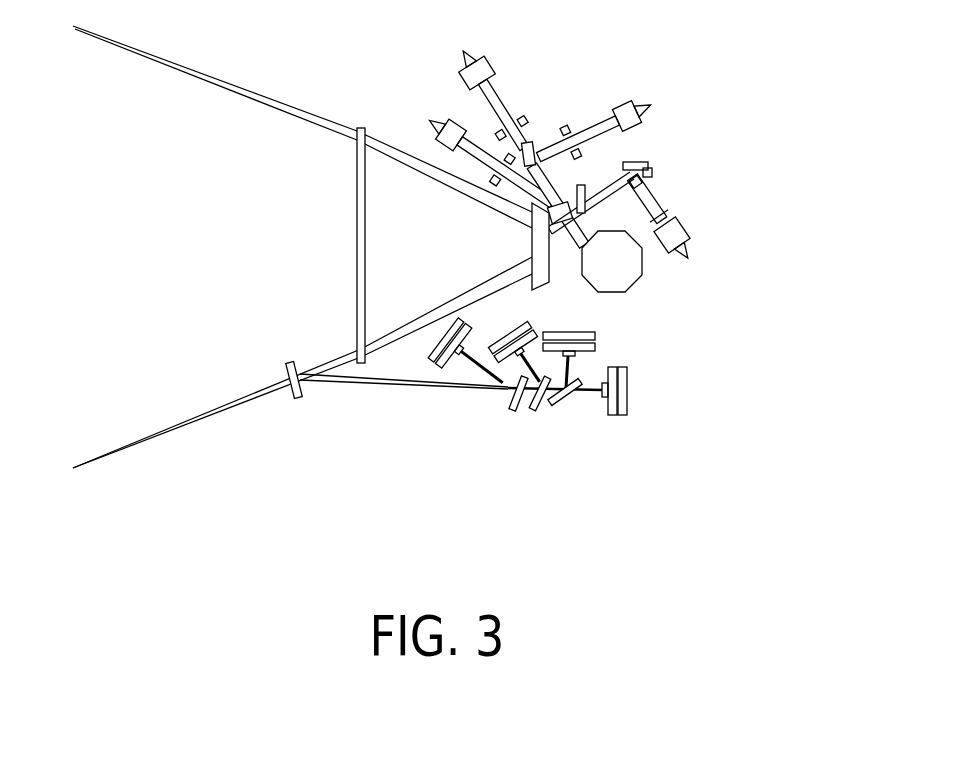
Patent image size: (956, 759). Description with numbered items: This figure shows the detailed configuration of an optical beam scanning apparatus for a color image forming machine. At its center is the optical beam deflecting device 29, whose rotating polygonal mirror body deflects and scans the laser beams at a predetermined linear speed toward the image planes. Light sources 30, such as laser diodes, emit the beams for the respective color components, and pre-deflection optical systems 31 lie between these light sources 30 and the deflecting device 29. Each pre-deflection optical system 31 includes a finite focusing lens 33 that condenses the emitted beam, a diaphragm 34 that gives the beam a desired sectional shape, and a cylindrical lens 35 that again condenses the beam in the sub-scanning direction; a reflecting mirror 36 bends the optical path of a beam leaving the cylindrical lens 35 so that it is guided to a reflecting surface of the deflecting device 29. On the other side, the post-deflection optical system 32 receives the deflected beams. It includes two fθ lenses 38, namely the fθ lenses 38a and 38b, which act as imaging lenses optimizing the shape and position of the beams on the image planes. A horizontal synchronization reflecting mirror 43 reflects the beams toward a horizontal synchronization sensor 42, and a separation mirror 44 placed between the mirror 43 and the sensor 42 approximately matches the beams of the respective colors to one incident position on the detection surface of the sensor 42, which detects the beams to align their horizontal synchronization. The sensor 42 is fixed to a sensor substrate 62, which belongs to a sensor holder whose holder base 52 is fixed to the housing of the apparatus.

The optical beam deflecting device 29 is at (640, 285).
The light source 30 is at (693, 250).
The pre-deflection optical system 31 is at (648, 145).
The post-deflection optical system 32 is at (178, 230).
The finite focusing lens 33 is at (693, 220).
The diaphragm 34 is at (670, 210).
The cylindrical lens 35 is at (652, 172).
The reflecting mirror 36 is at (633, 160).
The fθ lens 38 is at (429, 345).
The fθ lens 38a is at (358, 315).
The fθ lens 38b is at (532, 247).
The horizontal synchronization sensor 42 is at (500, 385).
The horizontal synchronization reflecting mirror 43 is at (293, 398).
The separation mirror 44 is at (513, 408).
The holder base 52 is at (460, 322).
The sensor substrate 62 is at (448, 366).